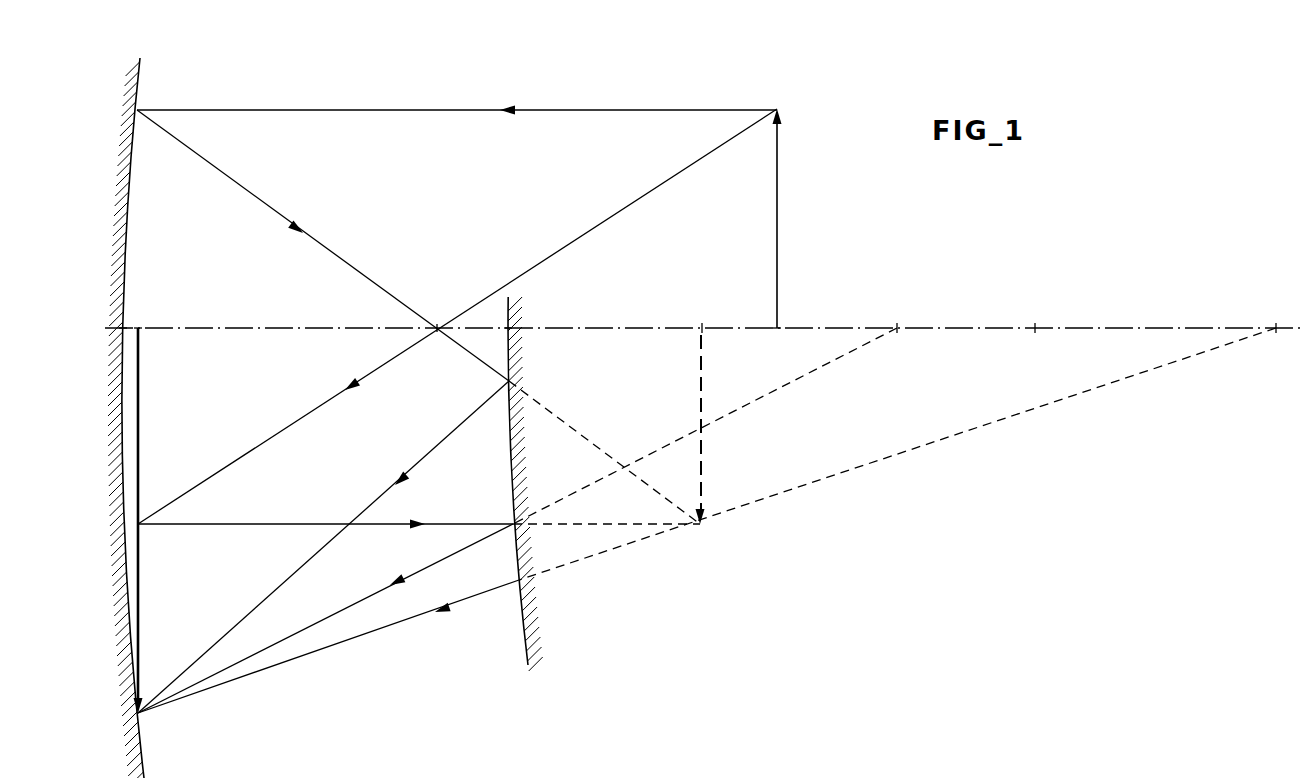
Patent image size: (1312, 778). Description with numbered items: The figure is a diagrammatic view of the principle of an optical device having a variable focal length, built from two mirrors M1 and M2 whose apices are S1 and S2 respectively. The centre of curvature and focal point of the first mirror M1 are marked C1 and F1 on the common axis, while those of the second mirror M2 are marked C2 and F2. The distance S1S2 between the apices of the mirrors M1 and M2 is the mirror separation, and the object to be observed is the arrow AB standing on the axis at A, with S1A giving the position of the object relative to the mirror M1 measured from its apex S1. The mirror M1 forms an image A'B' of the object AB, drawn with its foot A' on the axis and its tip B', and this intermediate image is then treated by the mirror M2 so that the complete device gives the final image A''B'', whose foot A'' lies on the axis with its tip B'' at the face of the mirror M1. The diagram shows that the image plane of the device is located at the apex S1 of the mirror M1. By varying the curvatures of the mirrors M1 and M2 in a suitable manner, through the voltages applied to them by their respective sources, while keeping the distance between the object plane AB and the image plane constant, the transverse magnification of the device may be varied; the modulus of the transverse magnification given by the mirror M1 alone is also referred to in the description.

The mirror M1 is at (140, 92).
The mirror M2 is at (512, 310).
The apex of mirror M1 S1 is at (122, 328).
The apex of mirror M2 S2 is at (507, 333).
The object foot point A is at (776, 347).
The object tip point B is at (775, 203).
The intermediate image foot point A' is at (701, 315).
The intermediate image tip point B' is at (711, 444).
The final image foot point A'' is at (151, 312).
The final image tip point B'' is at (119, 527).
The focal point of mirror M1 F1 is at (437, 320).
The focal point of mirror M2 F2 is at (898, 315).
The centre of curvature of mirror M1 C1 is at (1038, 314).
The centre of curvature of mirror M2 C2 is at (1277, 313).